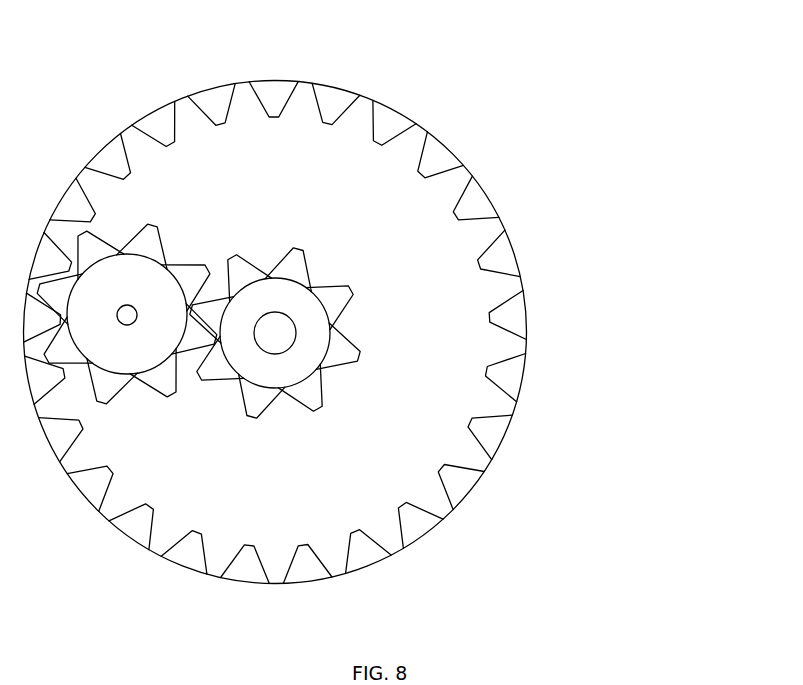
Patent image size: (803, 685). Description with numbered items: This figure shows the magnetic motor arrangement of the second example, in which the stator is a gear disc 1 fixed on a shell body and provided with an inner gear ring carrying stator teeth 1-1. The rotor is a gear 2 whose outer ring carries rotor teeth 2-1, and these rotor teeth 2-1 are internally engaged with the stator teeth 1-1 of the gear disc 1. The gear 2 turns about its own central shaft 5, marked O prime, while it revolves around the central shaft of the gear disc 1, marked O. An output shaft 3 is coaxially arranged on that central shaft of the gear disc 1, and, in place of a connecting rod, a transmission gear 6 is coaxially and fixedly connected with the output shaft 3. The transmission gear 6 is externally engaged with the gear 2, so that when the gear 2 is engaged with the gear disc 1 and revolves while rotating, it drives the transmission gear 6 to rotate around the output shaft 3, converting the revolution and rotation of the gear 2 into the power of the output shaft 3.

The gear disc 1 is at (428, 428).
The stator teeth 1-1 is at (478, 263).
The gear 2 is at (88, 298).
The rotor teeth 2-1 is at (62, 292).
The output shaft 3 is at (258, 322).
The central shaft of the gear 5 is at (129, 312).
The transmission gear 6 is at (317, 355).